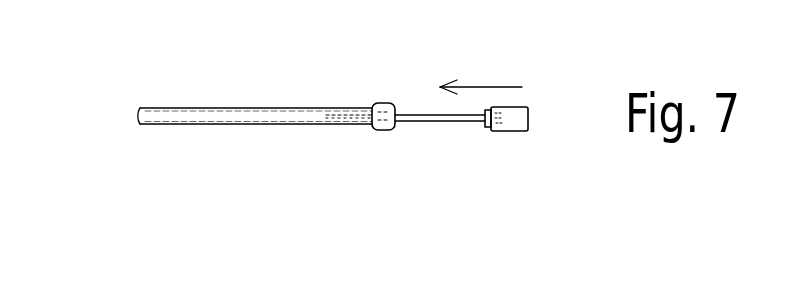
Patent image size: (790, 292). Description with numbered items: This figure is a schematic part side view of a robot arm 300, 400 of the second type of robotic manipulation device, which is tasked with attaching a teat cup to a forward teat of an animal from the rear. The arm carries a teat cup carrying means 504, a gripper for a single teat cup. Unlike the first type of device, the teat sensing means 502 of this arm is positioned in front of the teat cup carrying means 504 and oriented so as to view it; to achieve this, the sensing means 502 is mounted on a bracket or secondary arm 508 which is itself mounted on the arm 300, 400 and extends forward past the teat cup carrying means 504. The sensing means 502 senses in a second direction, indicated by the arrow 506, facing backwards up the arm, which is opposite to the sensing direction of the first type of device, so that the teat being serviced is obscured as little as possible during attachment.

The robot arm 300 is at (181, 79).
The robot arm 400 is at (255, 116).
The teat sensing means 502 is at (507, 131).
The teat cup carrying means 504 is at (380, 133).
The arrow 506 is at (478, 80).
The bracket or secondary arm 508 is at (410, 110).